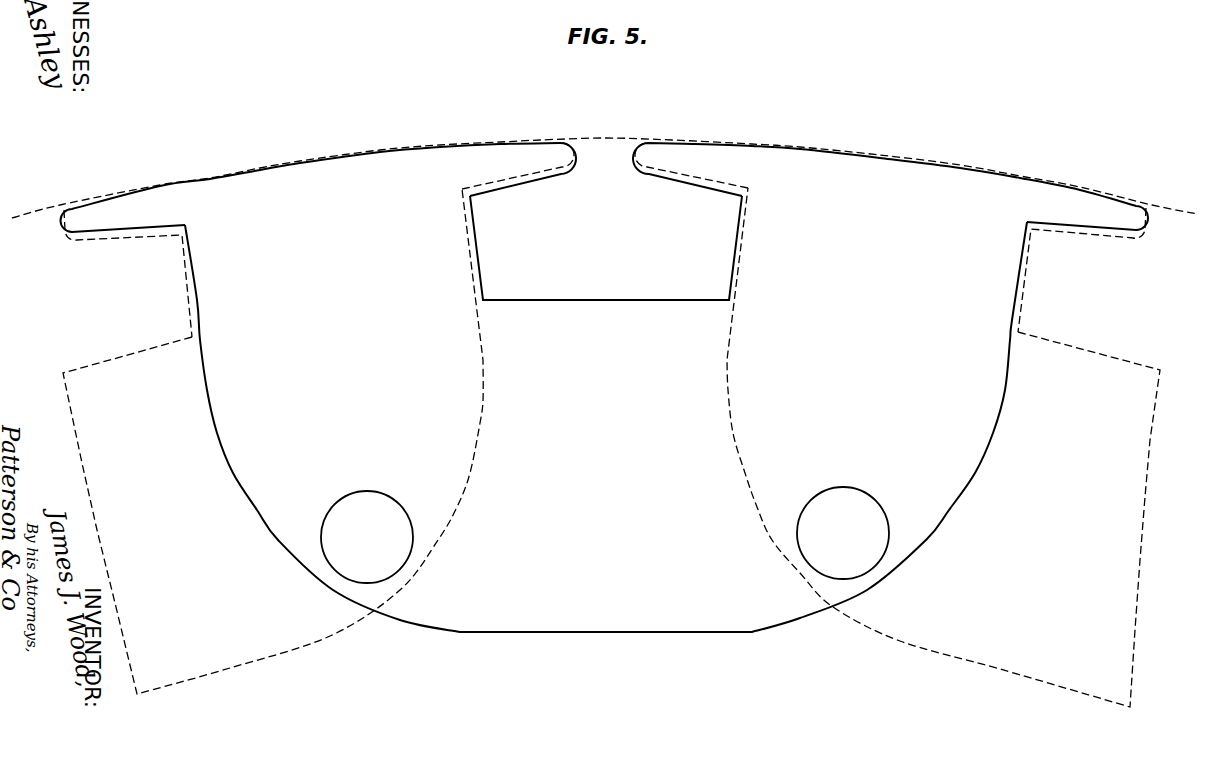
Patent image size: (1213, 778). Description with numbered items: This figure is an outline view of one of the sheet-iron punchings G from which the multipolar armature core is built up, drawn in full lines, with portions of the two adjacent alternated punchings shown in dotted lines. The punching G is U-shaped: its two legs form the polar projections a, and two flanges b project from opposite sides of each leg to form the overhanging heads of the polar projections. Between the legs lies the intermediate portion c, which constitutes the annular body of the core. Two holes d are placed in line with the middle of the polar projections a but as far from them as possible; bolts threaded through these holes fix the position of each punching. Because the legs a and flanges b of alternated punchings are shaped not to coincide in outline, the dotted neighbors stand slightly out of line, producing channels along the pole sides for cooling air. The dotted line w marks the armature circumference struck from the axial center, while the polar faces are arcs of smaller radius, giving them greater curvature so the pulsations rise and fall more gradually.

The dotted line w is at (605, 164).
The flanges b is at (605, 240).
The polar projections a is at (606, 427).
The intermediate portion c is at (606, 367).
The punching G is at (611, 447).
The holes d is at (605, 535).